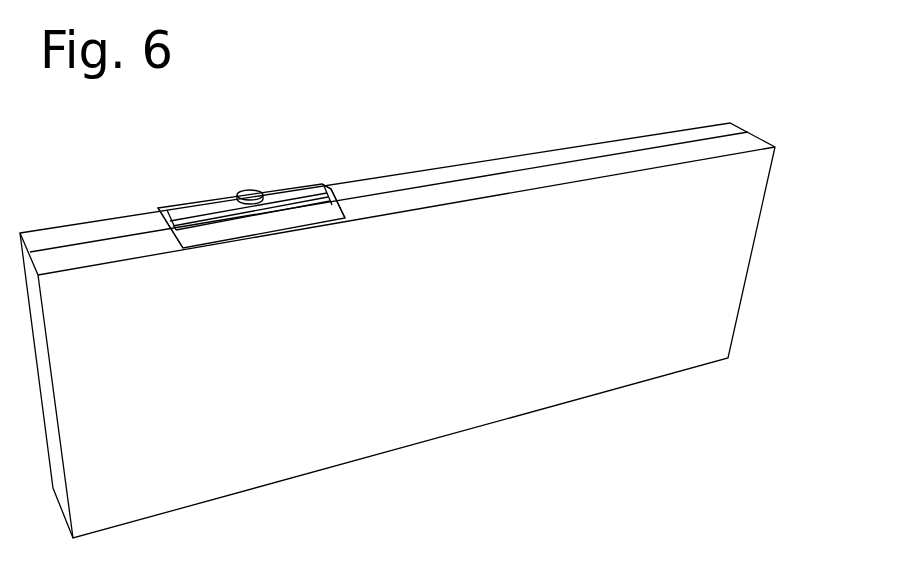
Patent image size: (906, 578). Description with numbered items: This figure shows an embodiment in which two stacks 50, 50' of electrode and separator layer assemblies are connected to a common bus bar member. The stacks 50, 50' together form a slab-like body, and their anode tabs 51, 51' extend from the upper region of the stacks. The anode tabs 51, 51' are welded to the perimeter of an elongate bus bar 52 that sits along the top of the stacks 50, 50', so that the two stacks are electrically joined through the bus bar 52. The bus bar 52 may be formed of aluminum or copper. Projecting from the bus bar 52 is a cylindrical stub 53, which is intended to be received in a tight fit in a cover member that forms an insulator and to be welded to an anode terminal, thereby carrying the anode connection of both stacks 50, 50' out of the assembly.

The stack of electrode and separator layer assemblies 50 is at (397, 288).
The stack of electrode and separator layer assemblies 50' is at (389, 160).
The anode tab 51 is at (357, 158).
The anode tab 51' is at (165, 191).
The elongate bus bar 52 is at (302, 192).
The cylindrical stub 53 is at (245, 190).